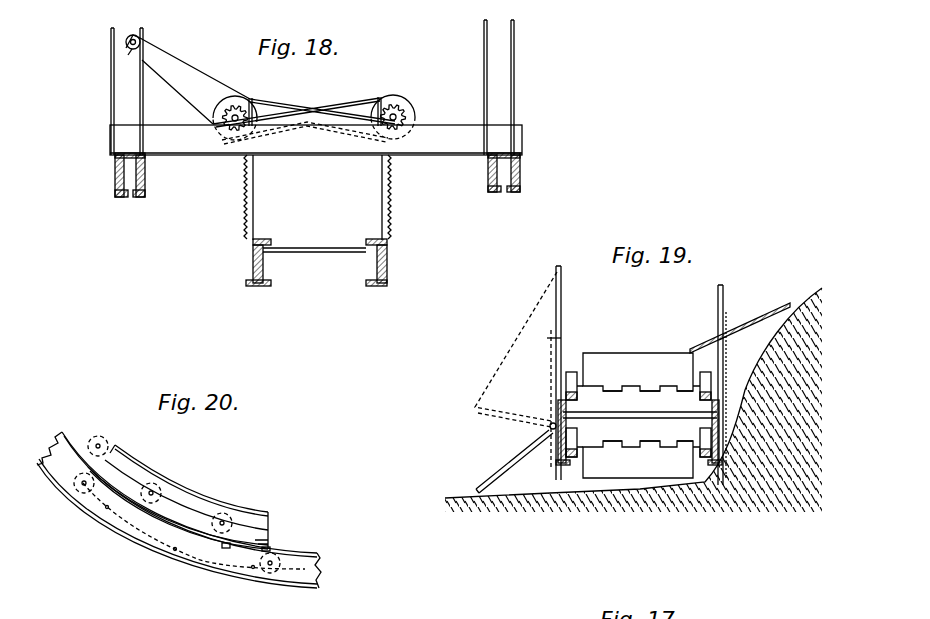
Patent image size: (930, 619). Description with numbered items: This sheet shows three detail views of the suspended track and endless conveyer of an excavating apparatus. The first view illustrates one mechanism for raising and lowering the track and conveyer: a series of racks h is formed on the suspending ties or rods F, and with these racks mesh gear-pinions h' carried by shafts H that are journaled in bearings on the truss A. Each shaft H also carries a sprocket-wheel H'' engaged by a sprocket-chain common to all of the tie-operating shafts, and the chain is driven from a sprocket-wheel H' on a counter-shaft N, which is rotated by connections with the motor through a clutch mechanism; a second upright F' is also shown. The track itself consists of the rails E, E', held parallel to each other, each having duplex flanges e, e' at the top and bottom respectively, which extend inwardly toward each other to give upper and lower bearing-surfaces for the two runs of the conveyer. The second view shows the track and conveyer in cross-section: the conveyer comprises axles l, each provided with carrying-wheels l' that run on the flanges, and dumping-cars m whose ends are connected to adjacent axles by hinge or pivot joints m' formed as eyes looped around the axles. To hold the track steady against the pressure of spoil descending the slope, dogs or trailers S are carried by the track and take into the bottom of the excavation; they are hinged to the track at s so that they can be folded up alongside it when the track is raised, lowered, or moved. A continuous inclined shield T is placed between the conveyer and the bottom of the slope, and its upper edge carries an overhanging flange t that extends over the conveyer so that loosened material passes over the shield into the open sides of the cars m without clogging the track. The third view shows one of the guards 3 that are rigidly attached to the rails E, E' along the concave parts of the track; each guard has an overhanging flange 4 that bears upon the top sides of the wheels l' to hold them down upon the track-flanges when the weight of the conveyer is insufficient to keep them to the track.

In FIG. 18, the truss A is at (327, 124).
In FIG. 18, the suspending ties or rods F is at (317, 197).
In FIG. 19, the suspending ties or rods F is at (530, 373).
In FIG. 18, the upright post F' is at (510, 106).
In FIG. 19, the upright post F' is at (710, 385).
In FIG. 18, the shaft H is at (320, 123).
In FIG. 18, the sprocket-wheel H' is at (145, 34).
In FIG. 18, the sprocket-wheel H'' is at (267, 91).
In FIG. 18, the rack h is at (317, 197).
In FIG. 18, the gear-pinion h' is at (340, 103).
In FIG. 18, the counter-shaft N is at (125, 60).
In FIG. 18, the track rail E is at (309, 264).
In FIG. 19, the track rail E is at (636, 446).
In FIG. 20, the track rail E is at (191, 510).
In FIG. 18, the track rail E' is at (366, 264).
In FIG. 19, the track rail E' is at (712, 445).
In FIG. 18, the upper flange e is at (320, 236).
In FIG. 18, the lower flange e' is at (316, 293).
In FIG. 19, the inclined shield T is at (735, 333).
In FIG. 19, the overhanging flange t is at (720, 342).
In FIG. 19, the dumping-car m is at (638, 415).
In FIG. 19, the hinge or pivot joint m' is at (648, 418).
In FIG. 19, the axle l is at (638, 416).
In FIG. 19, the carrying-wheel l' is at (638, 403).
In FIG. 20, the carrying-wheel l' is at (177, 504).
In FIG. 19, the dog or trailer S is at (514, 461).
In FIG. 19, the pivot s is at (551, 423).
In FIG. 20, the guard 3 is at (269, 526).
In FIG. 20, the overhanging flange 4 is at (184, 490).